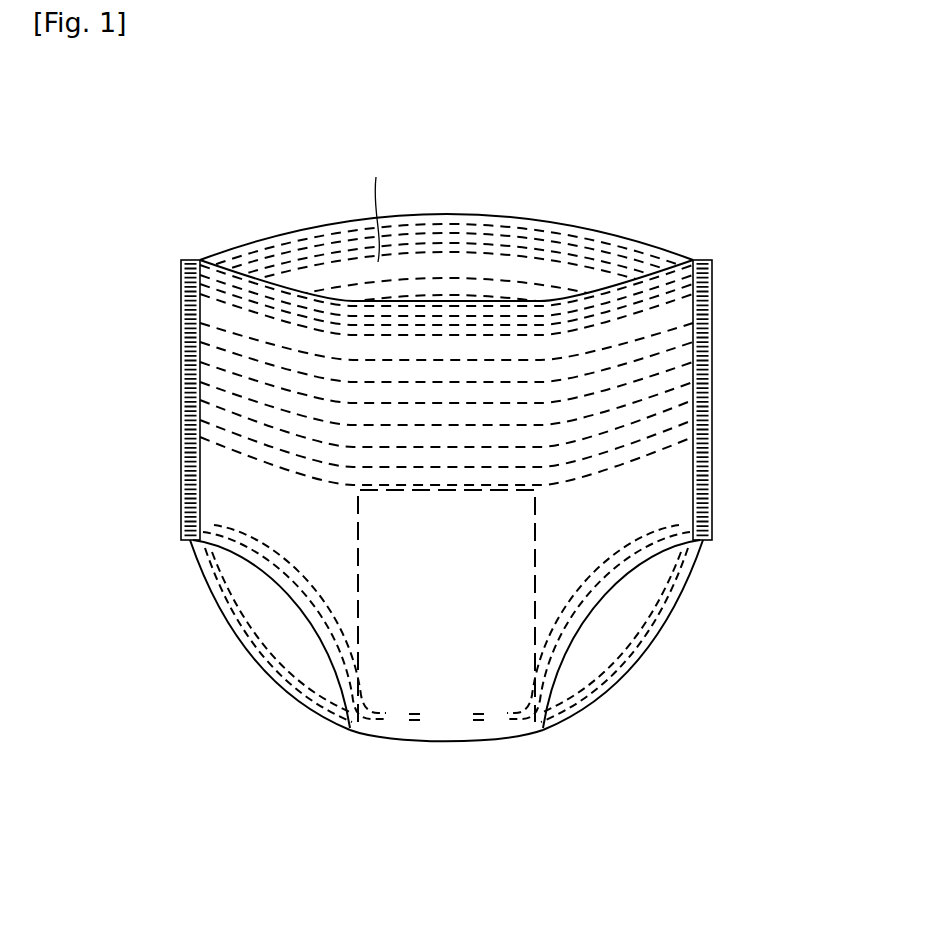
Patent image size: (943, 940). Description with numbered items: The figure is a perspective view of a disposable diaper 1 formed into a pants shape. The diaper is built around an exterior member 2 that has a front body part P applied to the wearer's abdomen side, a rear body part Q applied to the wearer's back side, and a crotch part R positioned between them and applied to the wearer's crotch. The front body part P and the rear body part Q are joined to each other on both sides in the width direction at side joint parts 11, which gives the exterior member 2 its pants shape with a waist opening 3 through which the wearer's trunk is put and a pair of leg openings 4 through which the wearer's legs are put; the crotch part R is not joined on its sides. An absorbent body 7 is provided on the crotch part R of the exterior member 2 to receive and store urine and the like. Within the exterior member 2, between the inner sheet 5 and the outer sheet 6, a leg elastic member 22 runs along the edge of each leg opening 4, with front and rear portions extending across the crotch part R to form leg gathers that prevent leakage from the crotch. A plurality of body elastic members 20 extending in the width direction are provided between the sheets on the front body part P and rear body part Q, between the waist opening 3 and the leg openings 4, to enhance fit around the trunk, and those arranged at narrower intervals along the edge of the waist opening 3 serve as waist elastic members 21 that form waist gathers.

The disposable diaper 1 is at (445, 448).
The exterior member 2 is at (446, 216).
The waist opening 3 is at (437, 267).
The leg opening 4 is at (287, 636).
The inner sheet 5 is at (577, 272).
The outer sheet 6 is at (548, 220).
The absorbent body 7 is at (365, 622).
The side joint part 11 is at (700, 378).
The body elastic member 20 is at (250, 444).
The waist elastic member 21 is at (312, 228).
The leg elastic member 22 is at (250, 558).
The front body part P is at (660, 510).
The rear body part Q is at (375, 203).
The crotch part R is at (445, 690).